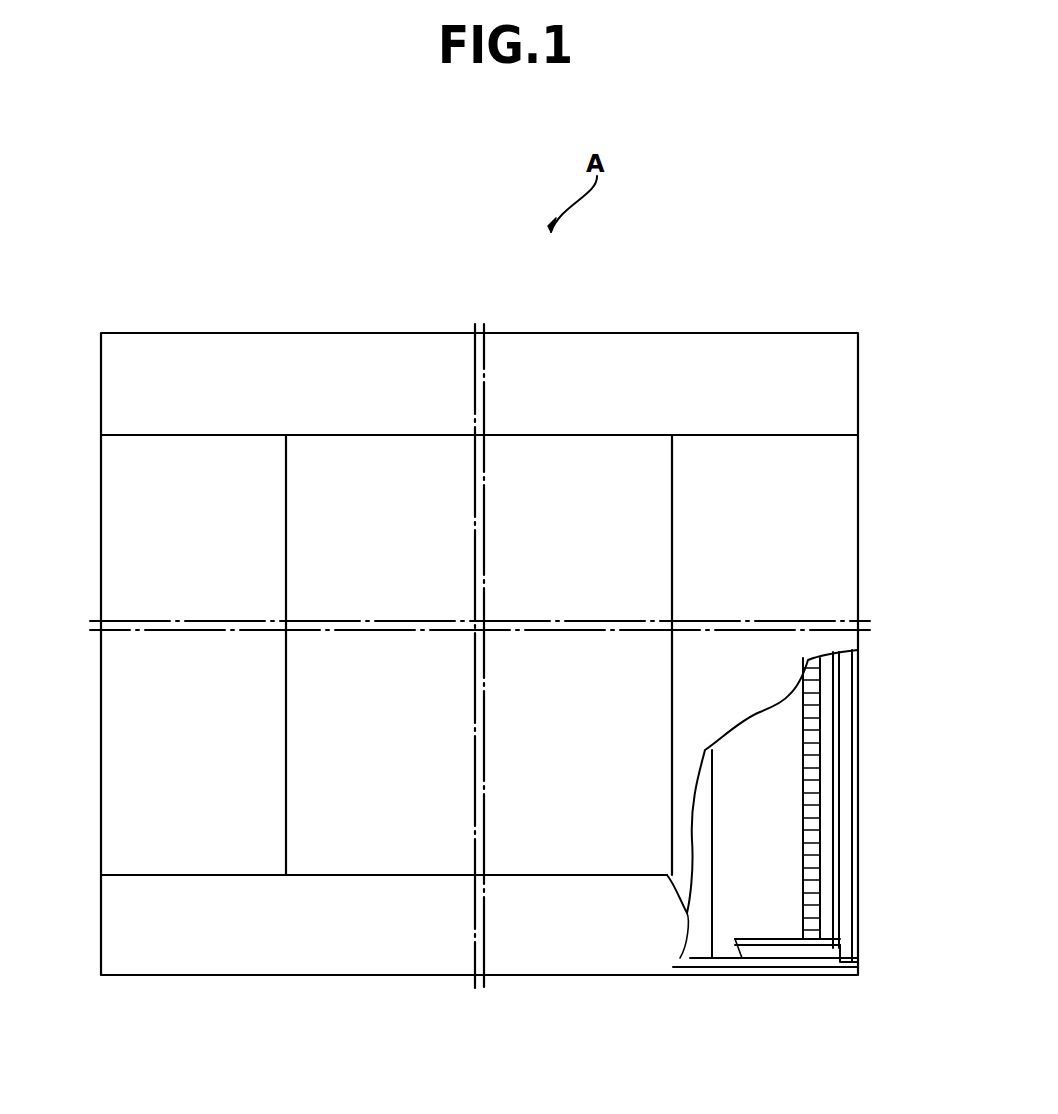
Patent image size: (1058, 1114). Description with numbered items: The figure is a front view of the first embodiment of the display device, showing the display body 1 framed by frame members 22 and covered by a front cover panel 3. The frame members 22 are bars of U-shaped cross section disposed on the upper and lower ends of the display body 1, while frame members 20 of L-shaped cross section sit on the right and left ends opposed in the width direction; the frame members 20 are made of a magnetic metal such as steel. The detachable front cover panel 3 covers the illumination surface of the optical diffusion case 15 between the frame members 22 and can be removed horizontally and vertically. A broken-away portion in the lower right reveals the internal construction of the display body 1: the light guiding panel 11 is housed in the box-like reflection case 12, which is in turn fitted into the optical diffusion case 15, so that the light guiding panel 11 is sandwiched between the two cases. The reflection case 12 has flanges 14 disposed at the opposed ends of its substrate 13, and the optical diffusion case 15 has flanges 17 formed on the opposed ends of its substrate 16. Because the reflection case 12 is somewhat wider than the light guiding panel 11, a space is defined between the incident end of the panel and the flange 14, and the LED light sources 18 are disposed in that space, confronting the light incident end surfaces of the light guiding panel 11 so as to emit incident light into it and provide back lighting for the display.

The display body 1 is at (581, 333).
The frame member 22 is at (745, 352).
The front cover panel 3 is at (612, 515).
The frame member 20 is at (804, 567).
The LED light source 18 is at (816, 694).
The substrate 16 is at (829, 812).
The reflection case 12 is at (840, 850).
The substrate 13 is at (700, 907).
The optical diffusion case 15 is at (723, 913).
The light guiding panel 11 is at (779, 915).
The flange 17 is at (793, 970).
The flange 14 is at (830, 967).